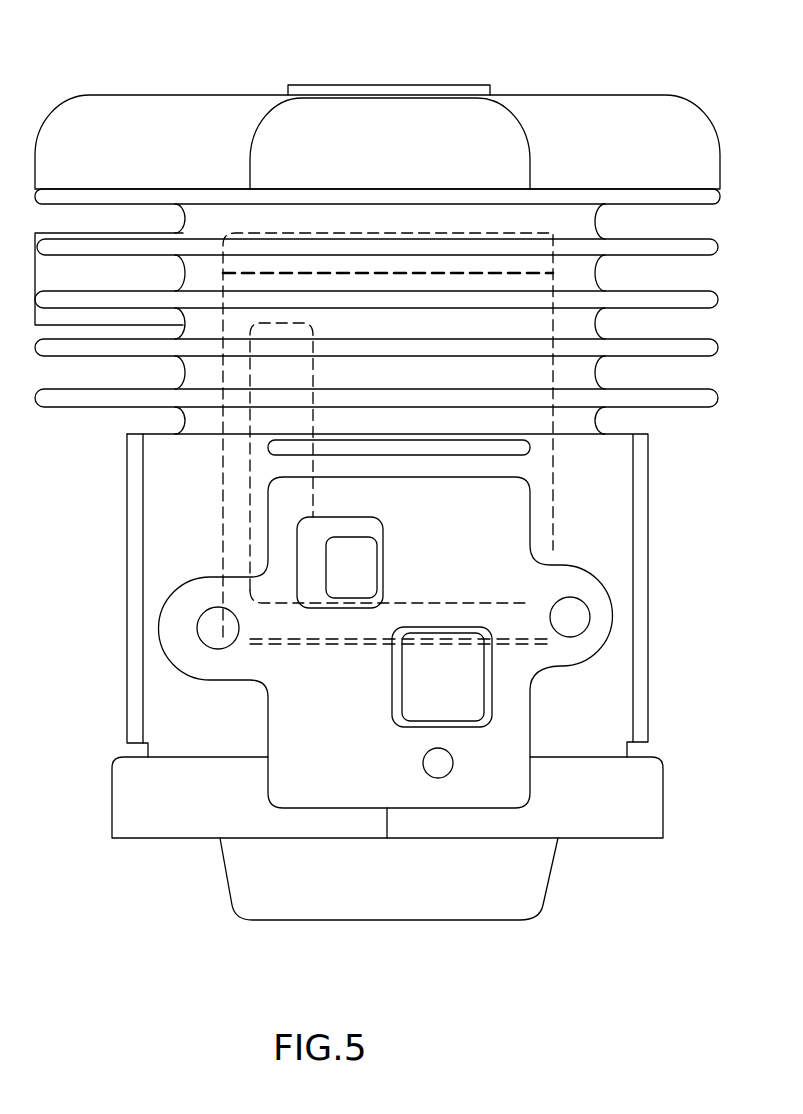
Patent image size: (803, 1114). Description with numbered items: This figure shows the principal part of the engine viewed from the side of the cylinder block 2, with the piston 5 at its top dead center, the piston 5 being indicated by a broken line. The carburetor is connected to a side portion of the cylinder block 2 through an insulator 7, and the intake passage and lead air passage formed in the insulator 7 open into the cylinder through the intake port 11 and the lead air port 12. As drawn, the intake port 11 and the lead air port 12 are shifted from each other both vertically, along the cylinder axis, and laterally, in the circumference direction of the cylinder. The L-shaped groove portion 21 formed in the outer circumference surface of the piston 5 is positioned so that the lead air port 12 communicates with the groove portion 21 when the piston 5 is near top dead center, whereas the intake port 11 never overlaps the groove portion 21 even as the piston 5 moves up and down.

The cylinder block 2 is at (627, 117).
The piston 5 is at (553, 438).
The insulator 7 is at (563, 655).
The intake port 11 is at (468, 692).
The lead air port 12 is at (333, 573).
The groove portion 21 is at (272, 471).